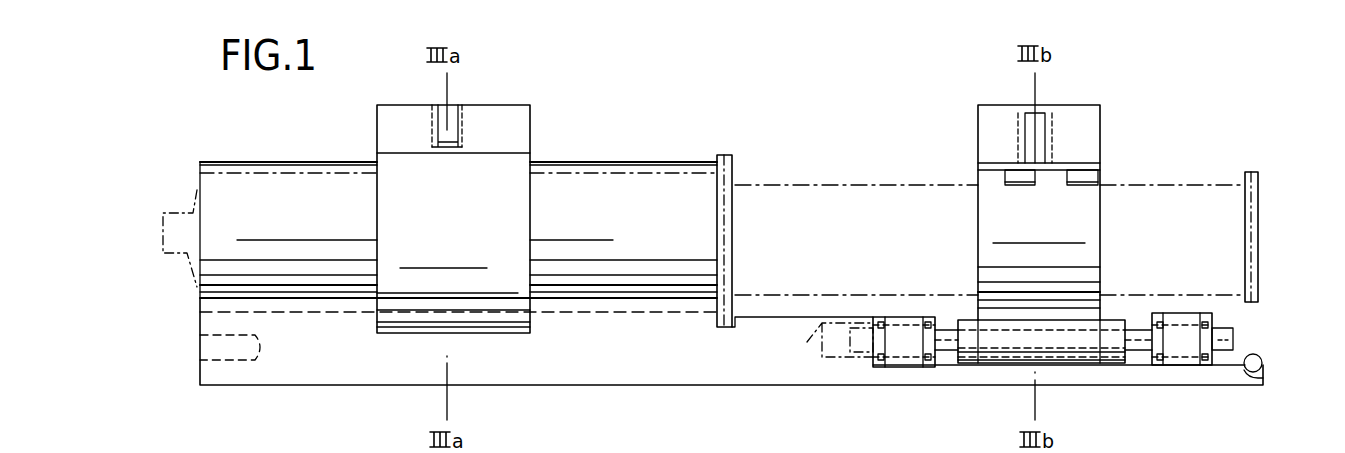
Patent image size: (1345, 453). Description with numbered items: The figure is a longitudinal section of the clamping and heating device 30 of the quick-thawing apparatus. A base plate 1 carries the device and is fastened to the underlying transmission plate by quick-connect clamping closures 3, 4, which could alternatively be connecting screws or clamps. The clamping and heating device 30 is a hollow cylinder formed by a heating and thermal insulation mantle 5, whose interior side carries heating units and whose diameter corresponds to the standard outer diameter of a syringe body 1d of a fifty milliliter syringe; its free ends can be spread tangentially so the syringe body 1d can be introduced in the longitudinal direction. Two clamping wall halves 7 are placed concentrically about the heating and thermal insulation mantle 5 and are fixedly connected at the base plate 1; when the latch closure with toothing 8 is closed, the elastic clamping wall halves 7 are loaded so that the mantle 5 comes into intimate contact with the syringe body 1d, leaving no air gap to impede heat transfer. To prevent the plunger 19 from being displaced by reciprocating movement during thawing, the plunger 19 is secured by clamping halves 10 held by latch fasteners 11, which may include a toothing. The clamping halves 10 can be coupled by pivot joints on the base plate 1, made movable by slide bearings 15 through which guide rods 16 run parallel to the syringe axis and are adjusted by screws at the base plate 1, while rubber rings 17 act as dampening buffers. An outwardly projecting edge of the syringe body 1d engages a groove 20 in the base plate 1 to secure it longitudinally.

The base plate 1 is at (523, 363).
The syringe body 1d is at (232, 215).
The clamping closure 3 is at (238, 362).
The clamping closure 4 is at (1263, 361).
The heating and thermal insulation mantle 5 is at (592, 163).
The clamping wall halves 7 is at (393, 180).
The latch closure with toothing 8 is at (440, 128).
The clamping halves 10 is at (993, 202).
The latch fasteners 11 is at (1023, 157).
The slide bearings 15 is at (903, 342).
The guide rods 16 is at (1133, 350).
The rubber rings 17 is at (933, 355).
The plunger 19 is at (800, 185).
The groove 20 is at (728, 327).
The clamping and heating device 30 is at (290, 152).